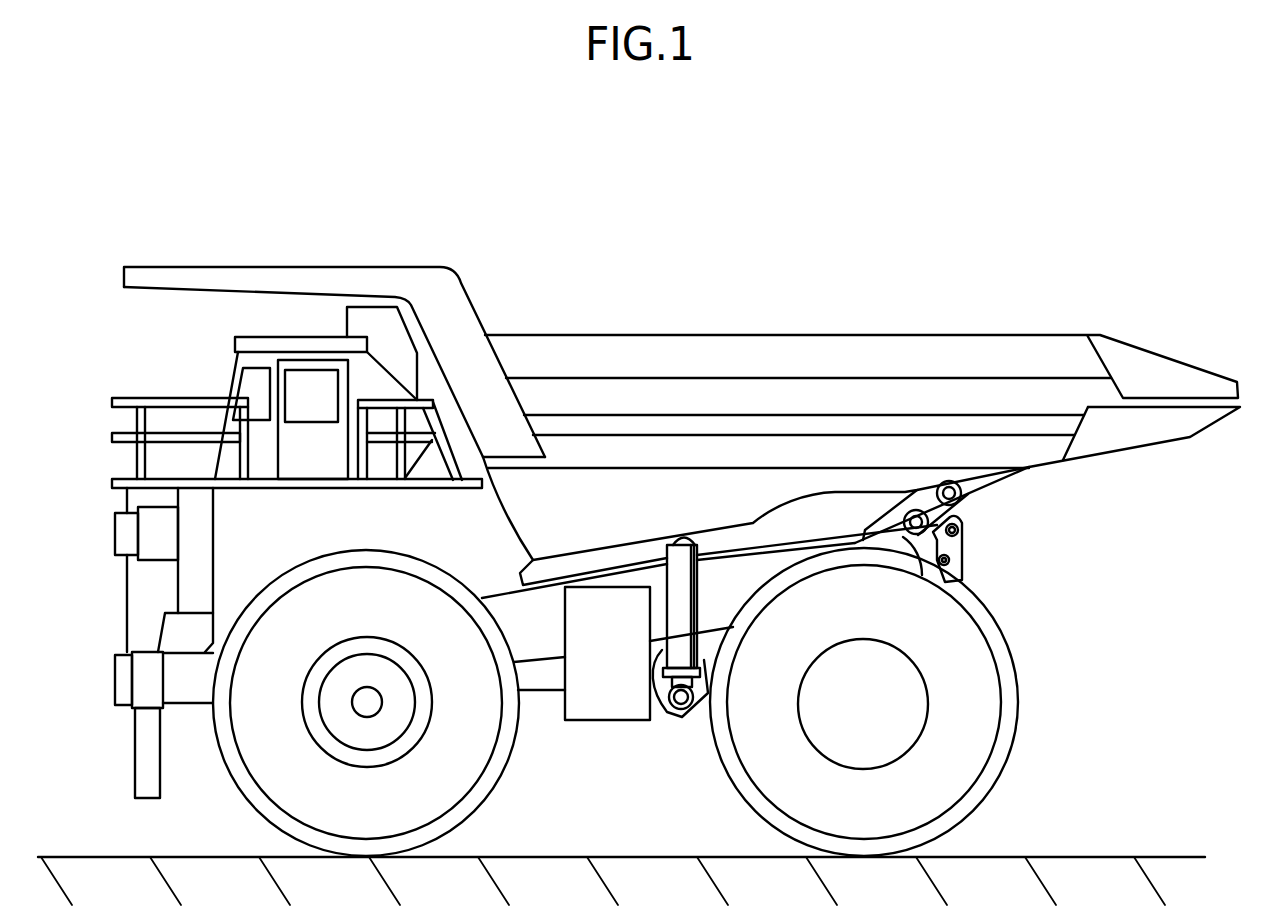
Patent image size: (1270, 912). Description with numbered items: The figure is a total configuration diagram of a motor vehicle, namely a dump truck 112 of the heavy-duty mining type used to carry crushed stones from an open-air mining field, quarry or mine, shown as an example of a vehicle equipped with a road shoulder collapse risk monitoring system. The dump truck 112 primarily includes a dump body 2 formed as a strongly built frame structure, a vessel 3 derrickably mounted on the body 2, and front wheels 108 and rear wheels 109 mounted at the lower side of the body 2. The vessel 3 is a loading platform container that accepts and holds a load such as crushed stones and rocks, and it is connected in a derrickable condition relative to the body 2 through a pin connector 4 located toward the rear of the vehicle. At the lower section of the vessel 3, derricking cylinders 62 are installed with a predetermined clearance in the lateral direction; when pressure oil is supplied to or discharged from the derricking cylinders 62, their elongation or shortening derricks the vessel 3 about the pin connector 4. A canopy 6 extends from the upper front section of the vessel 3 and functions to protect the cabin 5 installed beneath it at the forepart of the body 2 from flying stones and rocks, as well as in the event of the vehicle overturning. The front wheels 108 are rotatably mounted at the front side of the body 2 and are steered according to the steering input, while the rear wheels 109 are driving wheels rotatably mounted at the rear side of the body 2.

The dump truck 112 is at (630, 284).
The dump body 2 is at (228, 575).
The vessel 3 is at (775, 349).
The pin connector 4 is at (961, 495).
The cabin 5 is at (237, 368).
The canopy 6 is at (291, 265).
The derricking cylinder 62 is at (663, 707).
The front wheel 108 is at (249, 805).
The rear wheel 109 is at (1013, 653).